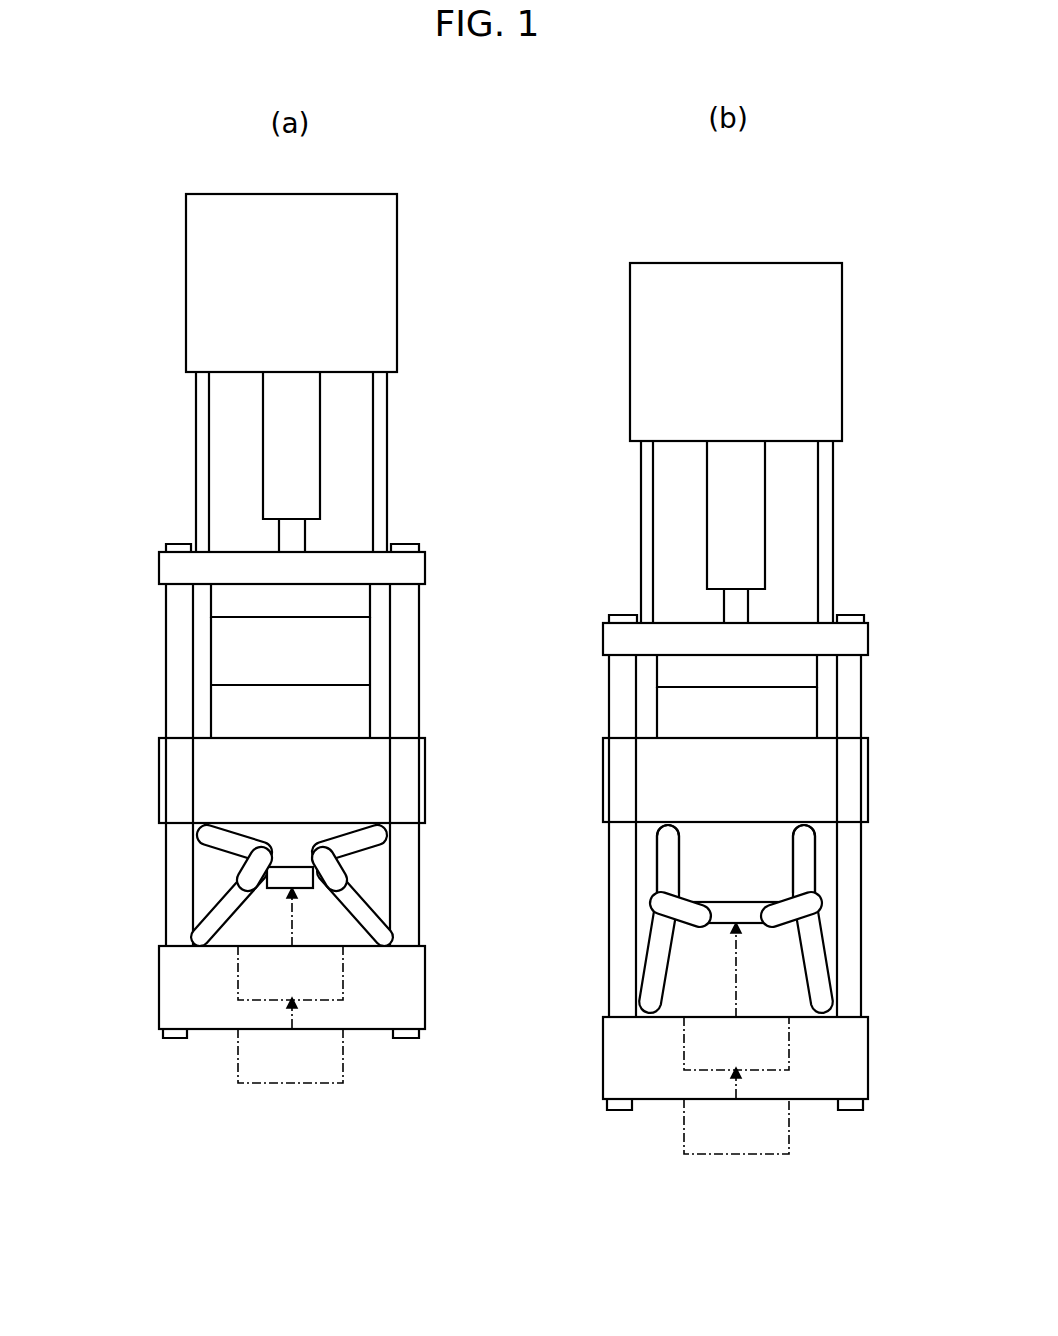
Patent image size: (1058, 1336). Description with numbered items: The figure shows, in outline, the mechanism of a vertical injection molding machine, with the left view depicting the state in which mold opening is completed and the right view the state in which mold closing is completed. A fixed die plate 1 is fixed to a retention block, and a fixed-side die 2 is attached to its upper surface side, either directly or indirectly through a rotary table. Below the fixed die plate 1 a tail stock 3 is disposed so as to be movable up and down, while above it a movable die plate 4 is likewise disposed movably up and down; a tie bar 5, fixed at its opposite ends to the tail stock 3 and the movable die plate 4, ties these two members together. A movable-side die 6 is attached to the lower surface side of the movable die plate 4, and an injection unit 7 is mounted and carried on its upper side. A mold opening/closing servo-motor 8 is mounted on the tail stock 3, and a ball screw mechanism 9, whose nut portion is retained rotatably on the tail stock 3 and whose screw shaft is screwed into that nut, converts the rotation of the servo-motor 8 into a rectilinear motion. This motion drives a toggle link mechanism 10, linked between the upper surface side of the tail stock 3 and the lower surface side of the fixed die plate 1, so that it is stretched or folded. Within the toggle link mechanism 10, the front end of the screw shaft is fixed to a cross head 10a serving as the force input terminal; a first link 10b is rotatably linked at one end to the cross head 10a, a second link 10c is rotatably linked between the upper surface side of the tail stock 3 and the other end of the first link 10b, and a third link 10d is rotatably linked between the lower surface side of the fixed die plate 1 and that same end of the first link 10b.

The fixed die plate 1 is at (172, 766).
The fixed-side die 2 is at (222, 703).
The tail stock 3 is at (160, 1000).
The movable die plate 4 is at (172, 572).
The tie bar 5 is at (177, 640).
The movable-side die 6 is at (215, 598).
The injection unit 7 is at (172, 194).
The mold opening/closing servo-motor 8 is at (300, 1083).
The ball screw mechanism 9 is at (238, 968).
The toggle link mechanism 10 is at (97, 817).
The cross head 10a is at (270, 883).
The first link 10b is at (248, 870).
The second link 10c is at (215, 912).
The third link 10d is at (210, 840).